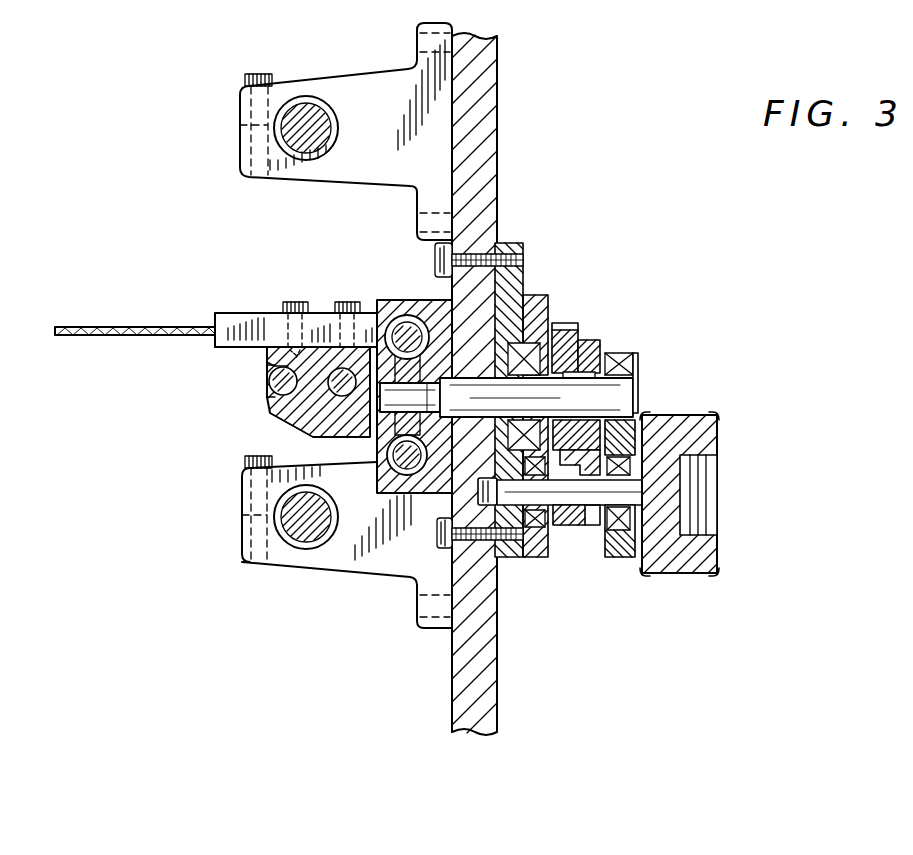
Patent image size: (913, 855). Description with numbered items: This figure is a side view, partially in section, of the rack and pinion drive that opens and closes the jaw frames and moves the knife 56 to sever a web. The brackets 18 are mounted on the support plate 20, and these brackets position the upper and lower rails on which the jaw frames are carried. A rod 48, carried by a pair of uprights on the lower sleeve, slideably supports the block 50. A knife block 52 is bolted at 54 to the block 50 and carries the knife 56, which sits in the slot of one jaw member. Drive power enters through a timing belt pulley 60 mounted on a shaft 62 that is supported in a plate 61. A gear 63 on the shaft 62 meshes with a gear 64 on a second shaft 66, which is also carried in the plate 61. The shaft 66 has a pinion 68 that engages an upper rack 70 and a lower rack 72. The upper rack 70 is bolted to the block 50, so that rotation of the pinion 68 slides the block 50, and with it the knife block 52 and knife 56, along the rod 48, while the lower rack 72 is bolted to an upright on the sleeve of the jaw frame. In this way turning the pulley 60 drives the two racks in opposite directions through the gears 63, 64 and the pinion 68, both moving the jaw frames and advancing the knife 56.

The bracket 18 is at (352, 83).
The support plate 20 is at (485, 108).
The rod 48 is at (282, 420).
The block 50 is at (265, 352).
The knife block 52 is at (322, 318).
The bolt 54 is at (285, 303).
The knife 56 is at (165, 323).
The timing belt pulley 60 is at (718, 554).
The plate 61 is at (625, 550).
The shaft 62 is at (600, 505).
The gear 63 is at (568, 525).
The gear 64 is at (590, 350).
The shaft 66 is at (615, 397).
The pinion 68 is at (350, 445).
The upper rack 70 is at (410, 335).
The lower rack 72 is at (398, 493).